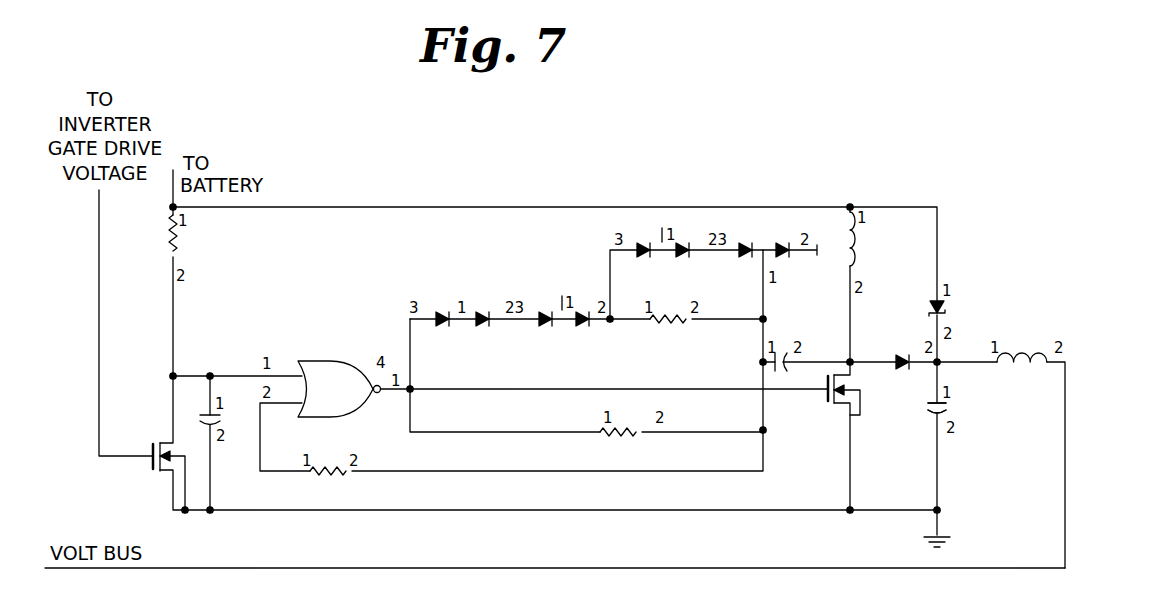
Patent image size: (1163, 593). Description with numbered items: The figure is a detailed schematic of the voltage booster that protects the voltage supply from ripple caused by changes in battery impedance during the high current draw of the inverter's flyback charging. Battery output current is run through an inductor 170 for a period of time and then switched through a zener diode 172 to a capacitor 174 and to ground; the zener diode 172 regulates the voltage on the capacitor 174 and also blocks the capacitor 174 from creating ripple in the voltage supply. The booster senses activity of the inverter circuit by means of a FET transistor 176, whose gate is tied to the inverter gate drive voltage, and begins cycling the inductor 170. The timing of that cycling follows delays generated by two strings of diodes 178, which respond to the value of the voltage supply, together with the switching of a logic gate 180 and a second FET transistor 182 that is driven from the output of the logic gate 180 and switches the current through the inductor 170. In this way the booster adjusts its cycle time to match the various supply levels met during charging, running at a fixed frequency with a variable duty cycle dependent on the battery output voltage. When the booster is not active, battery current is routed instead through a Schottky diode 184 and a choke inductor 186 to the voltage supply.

The inductor 170 is at (868, 245).
The zener diode 172 is at (905, 375).
The capacitor 174 is at (952, 412).
The FET transistor 176 is at (151, 470).
The diodes 178 is at (607, 240).
The logic gate 180 is at (320, 345).
The FET transistor 182 is at (831, 404).
The Schottky diode 184 is at (965, 312).
The choke inductor 186 is at (1068, 345).